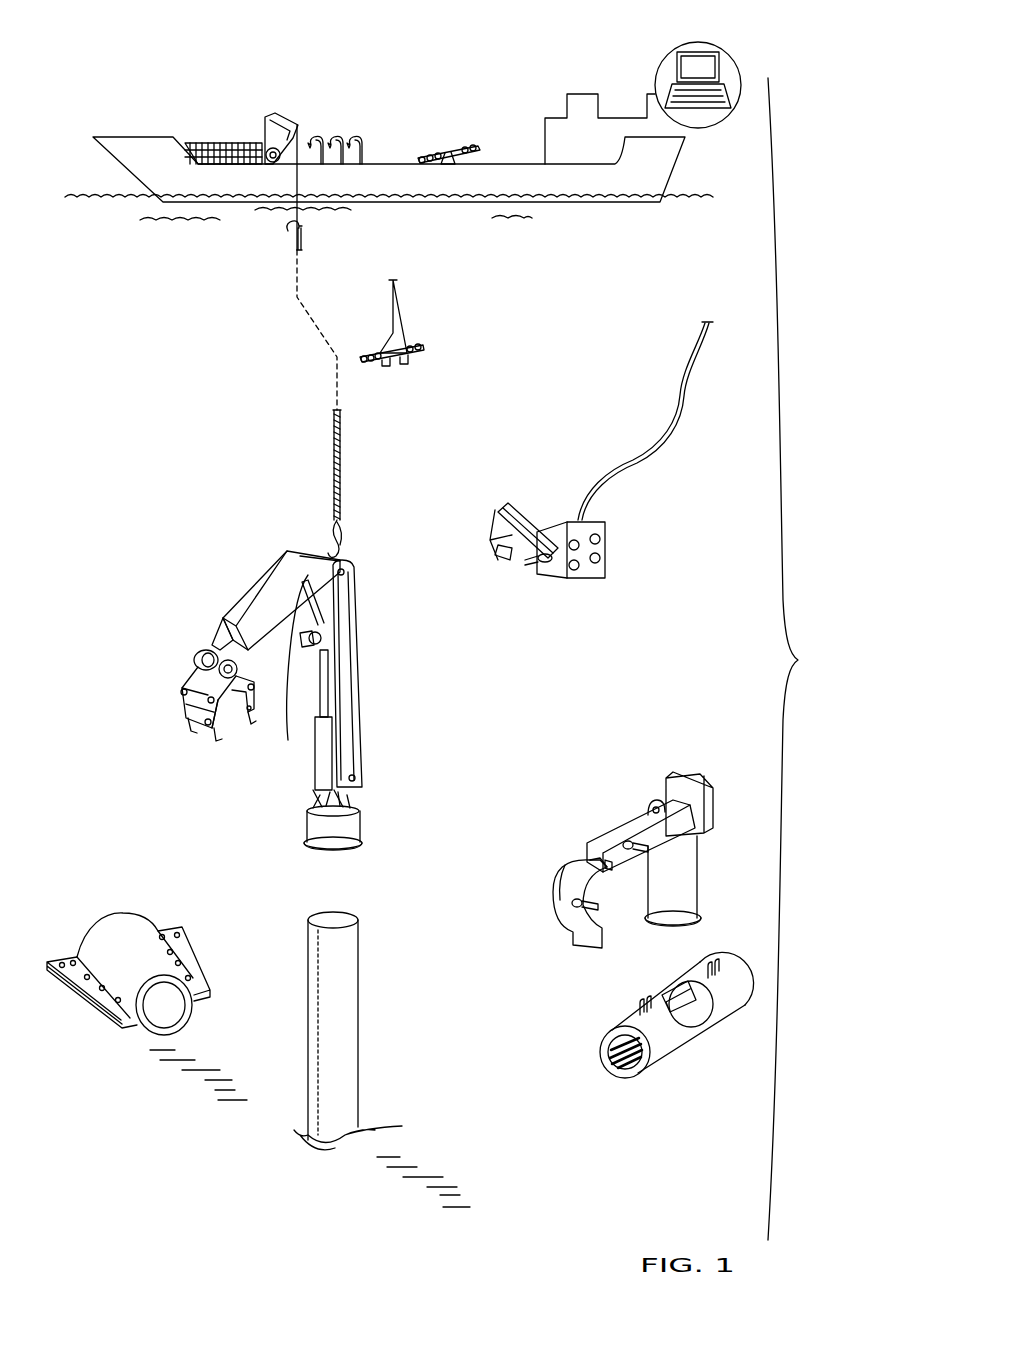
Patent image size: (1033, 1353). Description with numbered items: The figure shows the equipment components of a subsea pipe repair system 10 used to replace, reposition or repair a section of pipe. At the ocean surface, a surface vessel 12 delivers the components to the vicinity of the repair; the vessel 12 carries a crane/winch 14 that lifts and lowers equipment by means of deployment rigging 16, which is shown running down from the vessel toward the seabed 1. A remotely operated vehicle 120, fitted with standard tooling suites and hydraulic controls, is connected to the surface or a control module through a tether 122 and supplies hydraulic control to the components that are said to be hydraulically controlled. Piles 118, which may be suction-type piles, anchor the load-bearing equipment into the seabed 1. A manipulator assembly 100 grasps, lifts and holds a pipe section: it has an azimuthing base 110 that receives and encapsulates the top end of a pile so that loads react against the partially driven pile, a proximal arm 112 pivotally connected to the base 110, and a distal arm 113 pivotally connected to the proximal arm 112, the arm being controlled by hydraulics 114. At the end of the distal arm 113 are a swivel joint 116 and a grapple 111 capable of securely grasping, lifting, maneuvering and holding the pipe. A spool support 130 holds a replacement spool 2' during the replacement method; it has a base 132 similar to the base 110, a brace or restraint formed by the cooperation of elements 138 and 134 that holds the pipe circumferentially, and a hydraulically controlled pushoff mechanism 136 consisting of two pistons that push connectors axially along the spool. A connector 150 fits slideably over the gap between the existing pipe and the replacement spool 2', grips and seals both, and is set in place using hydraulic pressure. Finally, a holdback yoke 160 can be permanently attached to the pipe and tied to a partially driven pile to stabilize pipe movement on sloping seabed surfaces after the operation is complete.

The seabed 1 is at (455, 1186).
The replacement spool 2' is at (420, 233).
The system 10 is at (799, 659).
The surface vessel 12 is at (628, 84).
The crane/winch 14 is at (286, 125).
The deployment rigging 16 is at (342, 490).
The manipulator assembly 100 is at (342, 114).
The azimuthing base 110 is at (364, 826).
The grapple 111 is at (185, 716).
The proximal arm 112 is at (360, 725).
The distal arm 113 is at (258, 578).
The hydraulics 114 is at (312, 758).
The swivel joint 116 is at (198, 652).
The pile 118 is at (204, 136).
The remotely operated vehicle 120 is at (608, 548).
The tether 122 is at (678, 396).
The spool support 130 is at (639, 846).
The base 132 is at (692, 898).
The brace or restraint 134 is at (572, 875).
The pushoff mechanism 136 is at (622, 856).
The brace or restraint 138 is at (635, 822).
The connector 150 is at (668, 1042).
The holdback yoke 160 is at (208, 935).